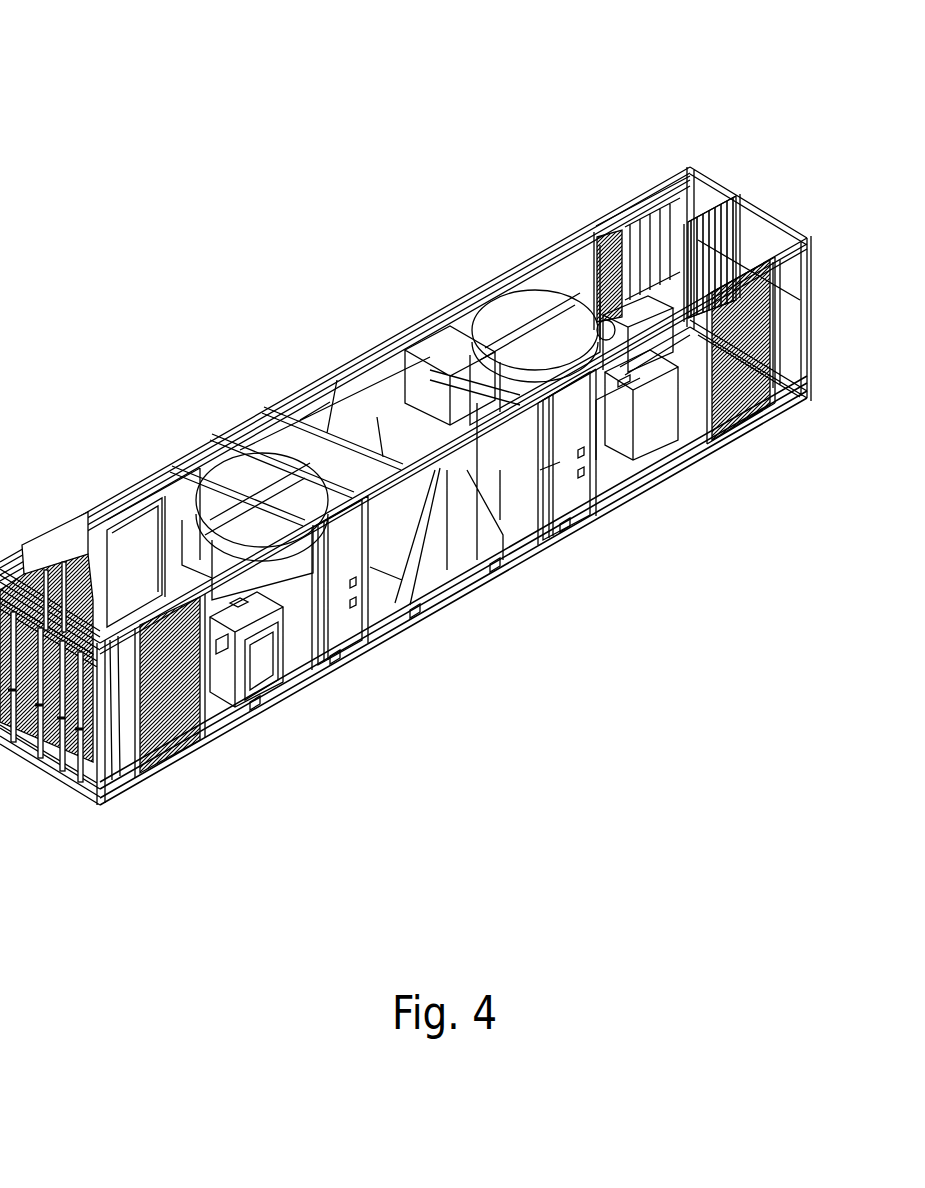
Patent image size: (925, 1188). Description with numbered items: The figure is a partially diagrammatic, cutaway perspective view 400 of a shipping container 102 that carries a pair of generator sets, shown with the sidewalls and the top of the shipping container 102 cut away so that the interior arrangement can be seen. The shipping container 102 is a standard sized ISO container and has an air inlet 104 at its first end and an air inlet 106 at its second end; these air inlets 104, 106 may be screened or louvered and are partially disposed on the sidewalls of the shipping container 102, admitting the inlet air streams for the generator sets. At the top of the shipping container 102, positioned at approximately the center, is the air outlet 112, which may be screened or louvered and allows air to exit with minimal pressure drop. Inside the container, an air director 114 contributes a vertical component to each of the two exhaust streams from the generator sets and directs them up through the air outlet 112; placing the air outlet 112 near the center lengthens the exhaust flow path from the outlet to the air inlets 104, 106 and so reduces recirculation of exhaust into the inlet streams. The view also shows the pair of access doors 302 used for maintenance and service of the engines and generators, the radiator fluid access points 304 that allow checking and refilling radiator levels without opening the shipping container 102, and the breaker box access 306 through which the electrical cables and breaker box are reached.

The modular data center module 400 is at (108, 70).
The shipping container 102 is at (565, 252).
The air inlet 104 is at (600, 237).
The air inlet 106 is at (183, 733).
The air outlet 112 is at (370, 338).
The air director 114 is at (353, 417).
The access doors 302 is at (563, 503).
The radiator fluid access points 304 is at (500, 377).
The breaker box access 306 is at (267, 660).